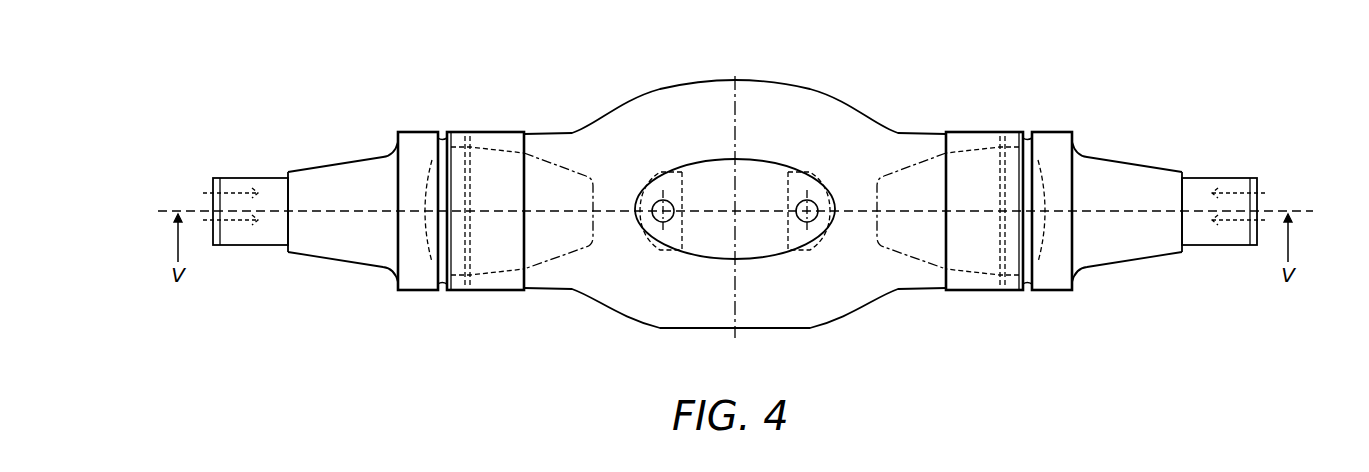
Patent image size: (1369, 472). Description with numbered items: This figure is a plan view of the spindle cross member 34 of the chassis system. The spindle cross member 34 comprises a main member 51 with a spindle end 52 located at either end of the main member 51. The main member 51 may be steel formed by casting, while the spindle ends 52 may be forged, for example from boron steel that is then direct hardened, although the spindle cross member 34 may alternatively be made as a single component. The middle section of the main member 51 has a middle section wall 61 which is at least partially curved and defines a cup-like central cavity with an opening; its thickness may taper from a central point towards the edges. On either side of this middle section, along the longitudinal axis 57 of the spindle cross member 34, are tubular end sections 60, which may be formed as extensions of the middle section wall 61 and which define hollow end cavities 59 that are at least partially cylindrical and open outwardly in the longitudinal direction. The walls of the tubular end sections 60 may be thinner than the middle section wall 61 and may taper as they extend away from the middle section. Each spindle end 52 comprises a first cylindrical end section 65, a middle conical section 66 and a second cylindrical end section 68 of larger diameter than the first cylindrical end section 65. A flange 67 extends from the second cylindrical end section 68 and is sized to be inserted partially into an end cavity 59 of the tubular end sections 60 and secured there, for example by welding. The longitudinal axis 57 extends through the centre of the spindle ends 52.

The spindle cross member 34 is at (836, 65).
The main member 51 is at (604, 309).
The spindle end 52 is at (735, 213).
The longitudinal axis 57 is at (158, 214).
The end cavity 59 is at (558, 178).
The tubular end section 60 is at (472, 292).
The middle section wall 61 is at (689, 329).
The first cylindrical end section 65 is at (237, 246).
The middle conical section 66 is at (333, 261).
The flange 67 is at (463, 137).
The second cylindrical end section 68 is at (412, 292).